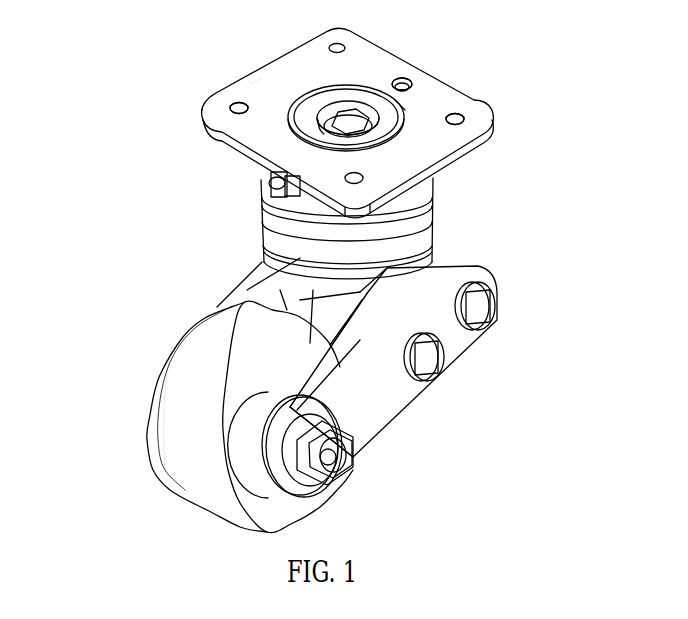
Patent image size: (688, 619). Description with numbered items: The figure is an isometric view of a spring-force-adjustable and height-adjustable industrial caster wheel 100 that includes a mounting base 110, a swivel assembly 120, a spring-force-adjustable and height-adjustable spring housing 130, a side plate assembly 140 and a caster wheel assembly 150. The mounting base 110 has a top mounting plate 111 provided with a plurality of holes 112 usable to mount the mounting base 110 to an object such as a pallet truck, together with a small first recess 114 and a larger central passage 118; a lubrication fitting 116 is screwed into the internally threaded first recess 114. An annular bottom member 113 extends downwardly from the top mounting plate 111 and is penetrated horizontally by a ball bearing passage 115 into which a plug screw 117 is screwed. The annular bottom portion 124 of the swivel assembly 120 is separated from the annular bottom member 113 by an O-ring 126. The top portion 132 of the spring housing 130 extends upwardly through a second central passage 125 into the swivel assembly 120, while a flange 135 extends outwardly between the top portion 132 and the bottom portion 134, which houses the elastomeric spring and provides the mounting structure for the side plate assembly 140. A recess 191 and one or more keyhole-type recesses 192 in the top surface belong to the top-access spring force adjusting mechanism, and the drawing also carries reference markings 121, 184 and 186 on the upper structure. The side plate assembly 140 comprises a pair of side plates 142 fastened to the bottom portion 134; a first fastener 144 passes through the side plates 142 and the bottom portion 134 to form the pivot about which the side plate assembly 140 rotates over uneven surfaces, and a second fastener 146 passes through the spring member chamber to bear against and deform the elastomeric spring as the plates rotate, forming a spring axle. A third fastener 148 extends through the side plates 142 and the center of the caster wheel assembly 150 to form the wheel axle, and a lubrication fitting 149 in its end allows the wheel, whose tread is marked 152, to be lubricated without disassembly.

The spring-force-adjustable and height-adjustable industrial caster wheel 100 is at (95, 151).
The mounting base 110 is at (205, 80).
The top mounting plate 111 is at (252, 82).
The holes 112 is at (238, 108).
The annular bottom member 113 is at (410, 190).
The first recess 114 is at (412, 80).
The ball bearing passage 115 is at (280, 192).
The lubrication fitting 116 is at (402, 86).
The plug screw 117 is at (272, 183).
The central passage 118 is at (400, 103).
The swivel assembly 120 is at (256, 221).
The boss flange 121 is at (322, 130).
The annular bottom portion (height-adjusting member) 124 is at (383, 232).
The second central passage 125 is at (333, 104).
The O-ring 126 is at (408, 200).
The spring-force-adjustable and height-adjustable spring housing 130 is at (256, 243).
The top portion 132 is at (358, 120).
The bottom portion 134 is at (370, 292).
The flange 135 is at (388, 272).
The side plate assembly 140 is at (505, 283).
The side plates 142 is at (238, 290).
The first fastener 144 is at (480, 305).
The second fastener 146 is at (413, 367).
The third fastener 148 is at (312, 468).
The lubrication fitting 149 is at (328, 457).
The caster wheel assembly 150 is at (155, 342).
The wheel tread 152 is at (195, 420).
The bore 184 is at (330, 135).
The bore rim 186 is at (325, 130).
The recess 191 is at (345, 130).
The keyhole-type recesses 192 is at (300, 108).